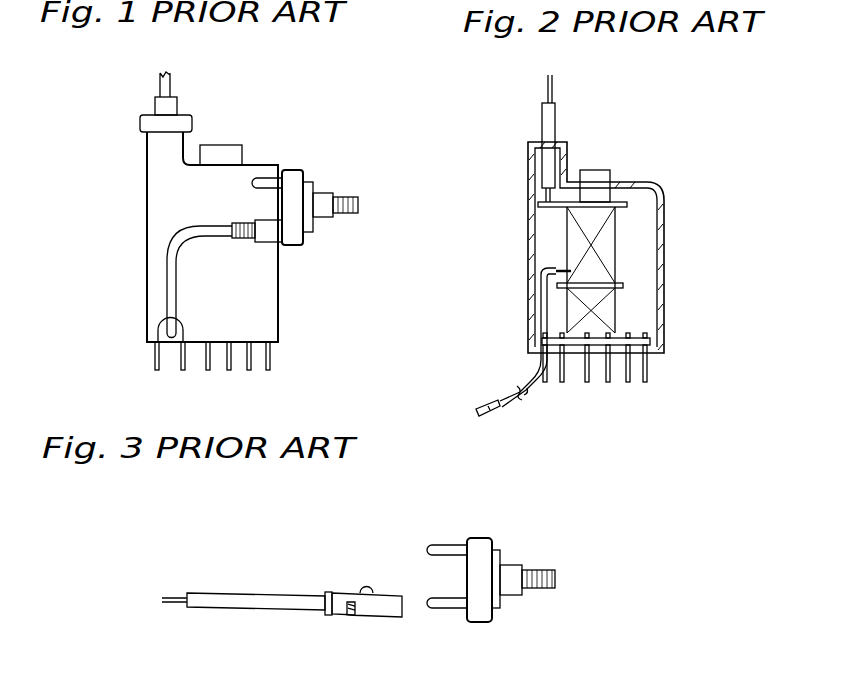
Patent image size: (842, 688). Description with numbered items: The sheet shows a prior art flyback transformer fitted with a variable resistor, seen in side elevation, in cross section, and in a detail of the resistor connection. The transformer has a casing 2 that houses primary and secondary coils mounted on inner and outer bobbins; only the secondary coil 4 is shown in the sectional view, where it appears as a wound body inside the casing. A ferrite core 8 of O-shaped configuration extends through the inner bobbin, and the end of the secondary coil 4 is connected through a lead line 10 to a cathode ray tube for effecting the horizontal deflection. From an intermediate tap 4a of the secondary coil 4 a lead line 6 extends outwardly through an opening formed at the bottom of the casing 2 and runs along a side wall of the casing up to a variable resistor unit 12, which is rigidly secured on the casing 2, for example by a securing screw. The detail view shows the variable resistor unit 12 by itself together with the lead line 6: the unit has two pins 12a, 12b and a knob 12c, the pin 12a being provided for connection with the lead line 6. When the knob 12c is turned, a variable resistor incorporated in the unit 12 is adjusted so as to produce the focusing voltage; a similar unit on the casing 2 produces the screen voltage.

In FIG. 1, the casing 2 is at (278, 295).
In FIG. 2, the casing 2 is at (528, 278).
In FIG. 2, the secondary coil 4 is at (608, 240).
In FIG. 2, the intermediate tap 4a is at (560, 270).
In FIG. 1, the lead line 6 is at (180, 250).
In FIG. 2, the lead line 6 is at (516, 403).
In FIG. 3, the lead line 6 is at (273, 595).
In FIG. 1, the ferrite core 8 is at (217, 145).
In FIG. 2, the ferrite core 8 is at (596, 170).
In FIG. 1, the lead line 10 is at (166, 80).
In FIG. 2, the lead line 10 is at (546, 117).
In FIG. 1, the variable resistor unit 12 is at (290, 170).
In FIG. 3, the variable resistor unit 12 is at (483, 542).
In FIG. 3, the pin 12a is at (447, 610).
In FIG. 3, the pin 12b is at (447, 545).
In FIG. 3, the knob 12c is at (546, 570).